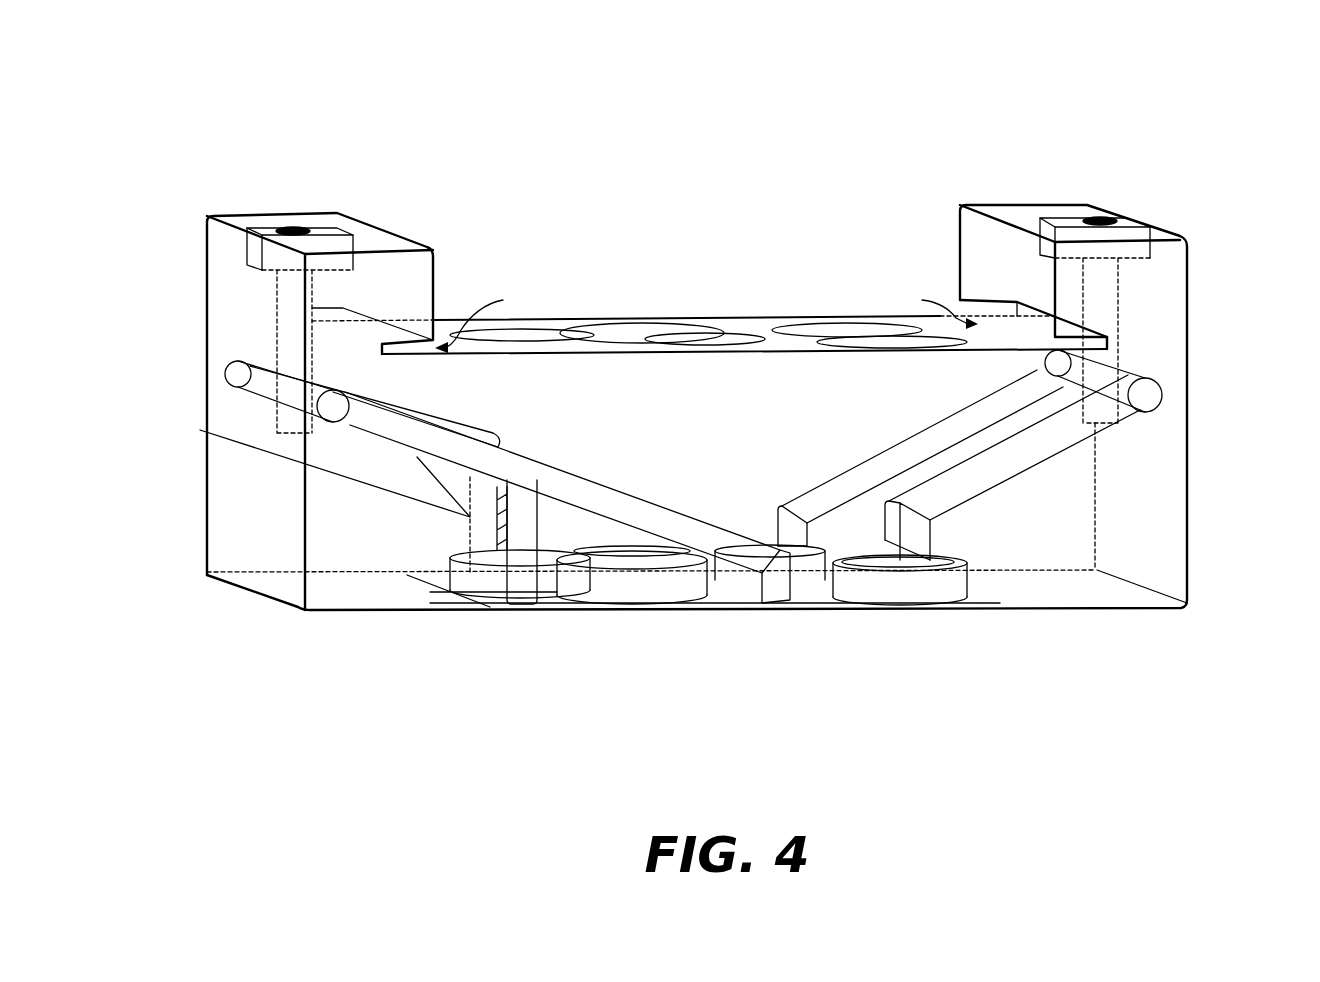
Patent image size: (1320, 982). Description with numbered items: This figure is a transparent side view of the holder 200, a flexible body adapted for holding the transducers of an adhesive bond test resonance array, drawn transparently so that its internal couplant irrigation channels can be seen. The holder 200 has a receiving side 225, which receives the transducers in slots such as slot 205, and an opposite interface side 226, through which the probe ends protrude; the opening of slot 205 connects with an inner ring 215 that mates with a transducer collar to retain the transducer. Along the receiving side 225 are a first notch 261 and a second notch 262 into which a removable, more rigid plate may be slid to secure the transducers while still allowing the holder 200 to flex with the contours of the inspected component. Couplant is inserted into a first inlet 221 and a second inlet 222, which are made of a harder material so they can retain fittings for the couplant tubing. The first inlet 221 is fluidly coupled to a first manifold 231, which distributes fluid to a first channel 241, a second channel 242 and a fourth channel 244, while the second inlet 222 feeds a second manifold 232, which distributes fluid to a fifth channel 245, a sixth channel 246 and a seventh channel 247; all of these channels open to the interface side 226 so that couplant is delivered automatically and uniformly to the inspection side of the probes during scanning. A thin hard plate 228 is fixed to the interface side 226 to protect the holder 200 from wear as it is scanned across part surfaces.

The holder 200 is at (379, 130).
The fifth slot 205 is at (628, 345).
The inner ring 215 is at (632, 586).
The first inlet 221 is at (294, 228).
The second inlet 222 is at (1100, 222).
The receiving side 225 is at (717, 260).
The interface side 226 is at (1097, 660).
The plate 228 is at (348, 600).
The first manifold 231 is at (247, 387).
The second manifold 232 is at (1150, 407).
The first channel 241 is at (345, 441).
The second channel 242 is at (480, 522).
The fourth channel 244 is at (605, 500).
The fifth channel 245 is at (822, 492).
The sixth channel 246 is at (890, 537).
The seventh channel 247 is at (1040, 448).
The first notch 261 is at (489, 319).
The second notch 262 is at (931, 306).